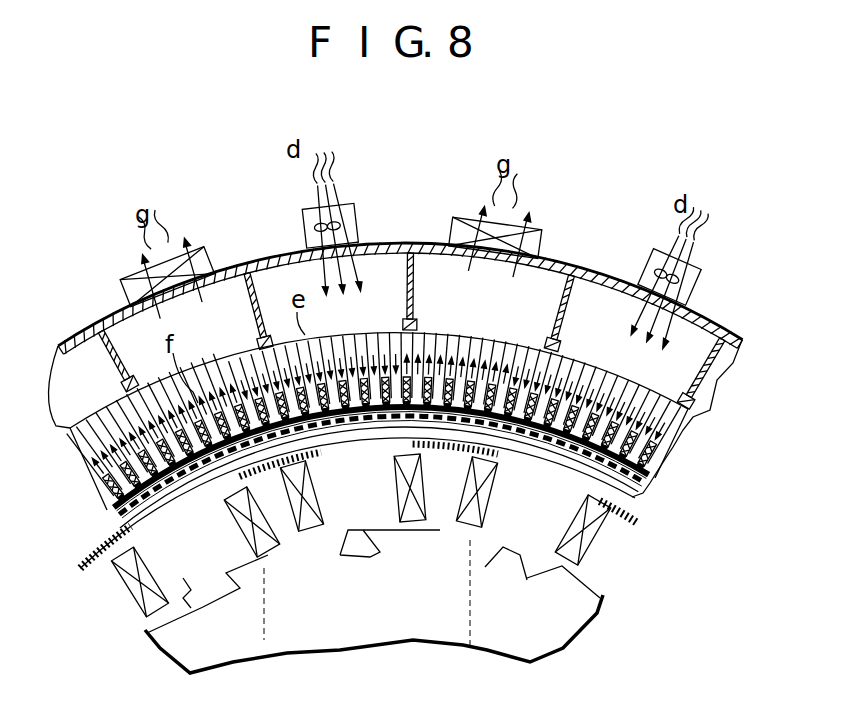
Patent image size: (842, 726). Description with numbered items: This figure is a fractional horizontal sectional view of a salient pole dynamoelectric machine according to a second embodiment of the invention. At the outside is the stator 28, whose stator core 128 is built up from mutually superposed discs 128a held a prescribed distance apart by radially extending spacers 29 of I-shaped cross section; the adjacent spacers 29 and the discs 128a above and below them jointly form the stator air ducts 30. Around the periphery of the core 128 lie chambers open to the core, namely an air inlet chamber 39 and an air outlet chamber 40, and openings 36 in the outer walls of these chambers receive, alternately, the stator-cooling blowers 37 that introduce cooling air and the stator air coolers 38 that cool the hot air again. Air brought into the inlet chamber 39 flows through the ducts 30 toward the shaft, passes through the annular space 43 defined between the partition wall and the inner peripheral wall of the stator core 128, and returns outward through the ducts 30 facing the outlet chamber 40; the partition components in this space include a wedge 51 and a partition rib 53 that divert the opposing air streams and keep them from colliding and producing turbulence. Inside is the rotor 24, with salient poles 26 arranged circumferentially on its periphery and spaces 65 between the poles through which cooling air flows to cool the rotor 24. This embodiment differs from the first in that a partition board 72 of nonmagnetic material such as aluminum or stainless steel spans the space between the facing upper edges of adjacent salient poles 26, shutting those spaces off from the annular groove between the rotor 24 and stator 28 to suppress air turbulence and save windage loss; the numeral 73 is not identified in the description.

The rotor 24 is at (612, 565).
The salient pole 26 is at (190, 604).
The stator 28 is at (714, 416).
The spacer 29 is at (472, 337).
The stator air duct 30 is at (348, 335).
The opening 36 is at (130, 296).
The stator-cooling blower 37 is at (351, 205).
The stator air cooler 38 is at (200, 245).
The air inlet chamber 39 is at (392, 255).
The air outlet chamber 40 is at (97, 327).
The annular space 43 is at (640, 495).
The wedge 51 is at (143, 514).
The partition rib 53 is at (345, 430).
The space between salient poles 65 is at (107, 477).
The partition board 72 is at (244, 471).
The field coil 73 is at (215, 495).
The stator core 128 is at (675, 443).
The disc 128a is at (73, 462).